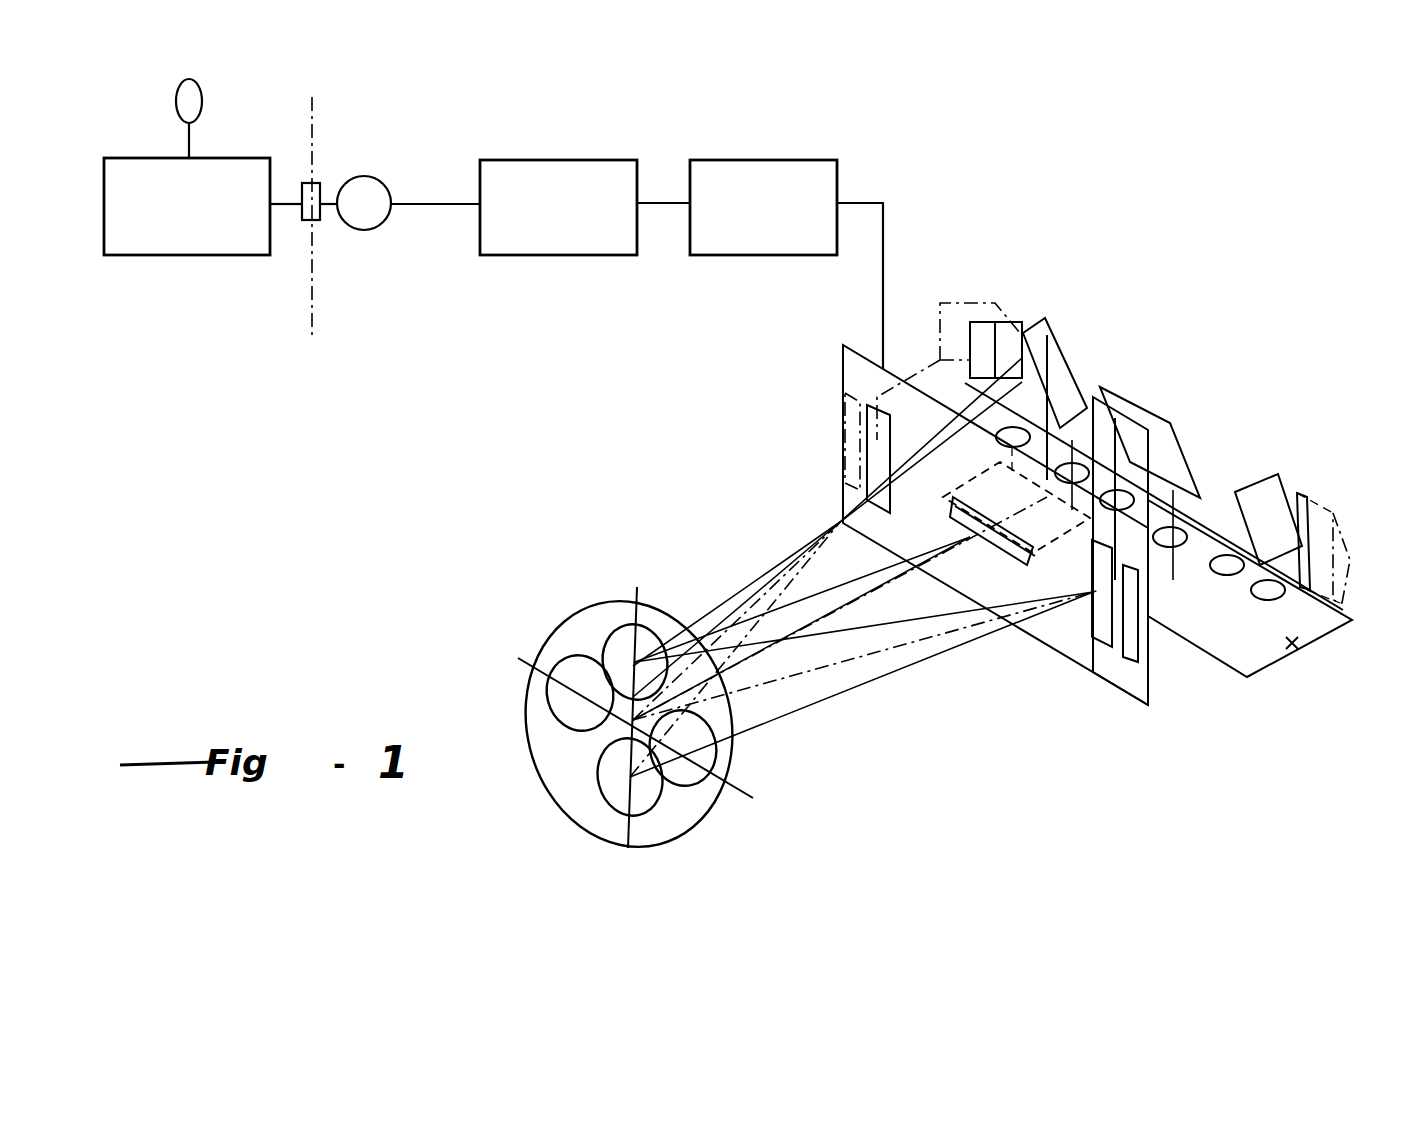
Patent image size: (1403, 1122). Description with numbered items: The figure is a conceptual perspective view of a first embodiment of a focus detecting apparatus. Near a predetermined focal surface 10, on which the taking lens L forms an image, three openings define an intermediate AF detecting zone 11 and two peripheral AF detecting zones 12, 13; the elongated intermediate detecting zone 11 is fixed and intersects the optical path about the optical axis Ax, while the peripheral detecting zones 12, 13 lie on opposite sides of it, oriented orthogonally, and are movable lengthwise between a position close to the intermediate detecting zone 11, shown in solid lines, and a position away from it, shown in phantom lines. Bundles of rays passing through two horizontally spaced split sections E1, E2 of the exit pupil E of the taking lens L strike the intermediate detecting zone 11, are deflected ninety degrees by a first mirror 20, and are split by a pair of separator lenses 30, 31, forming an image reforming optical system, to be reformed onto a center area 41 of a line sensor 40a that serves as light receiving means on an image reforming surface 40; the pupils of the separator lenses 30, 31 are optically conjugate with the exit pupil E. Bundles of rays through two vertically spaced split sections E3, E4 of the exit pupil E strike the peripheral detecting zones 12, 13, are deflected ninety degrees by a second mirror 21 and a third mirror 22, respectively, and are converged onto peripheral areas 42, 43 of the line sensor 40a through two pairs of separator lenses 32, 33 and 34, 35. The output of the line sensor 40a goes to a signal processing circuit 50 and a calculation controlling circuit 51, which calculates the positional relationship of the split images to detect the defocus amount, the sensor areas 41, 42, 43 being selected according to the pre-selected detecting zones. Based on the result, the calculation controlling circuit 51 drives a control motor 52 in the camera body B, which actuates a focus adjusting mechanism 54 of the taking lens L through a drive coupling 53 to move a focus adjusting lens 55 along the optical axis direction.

The focus adjusting lens 55 is at (203, 101).
The focus adjusting mechanism 54 is at (222, 255).
The drive coupling 53 is at (318, 190).
The control motor 52 is at (370, 230).
The calculation controlling circuit 51 is at (580, 255).
The signal processing circuit 50 is at (775, 255).
The taking lens L is at (277, 305).
The camera body B is at (338, 305).
The peripheral AF detecting zone 13 is at (843, 405).
The predetermined focal surface 10 is at (1100, 668).
The peripheral AF detecting zone 12 is at (1097, 647).
The second mirror 21 is at (940, 316).
The third mirror 22 is at (1060, 338).
The separator lens 34 is at (1095, 402).
The first mirror 20 is at (1143, 413).
The separator lens 31 is at (1160, 466).
The separator lens 35 is at (1012, 430).
The separator lens 30 is at (1200, 498).
The separator lens 32 is at (1228, 580).
The separator lens 33 is at (1343, 603).
The image reforming surface 40 is at (1257, 660).
The line sensor 40a is at (1340, 633).
The peripheral area of line sensor 42 is at (1295, 640).
The center area of line sensor 41 is at (1168, 600).
The intermediate AF detecting zone 11 is at (1007, 553).
The peripheral area of line sensor 43 is at (988, 460).
The optical axis Ax is at (862, 645).
The exit pupil E is at (723, 817).
The split section of exit pupil E1 is at (720, 753).
The split section of exit pupil E2 is at (565, 653).
The split section of exit pupil E3 is at (627, 625).
The split section of exit pupil E4 is at (655, 813).